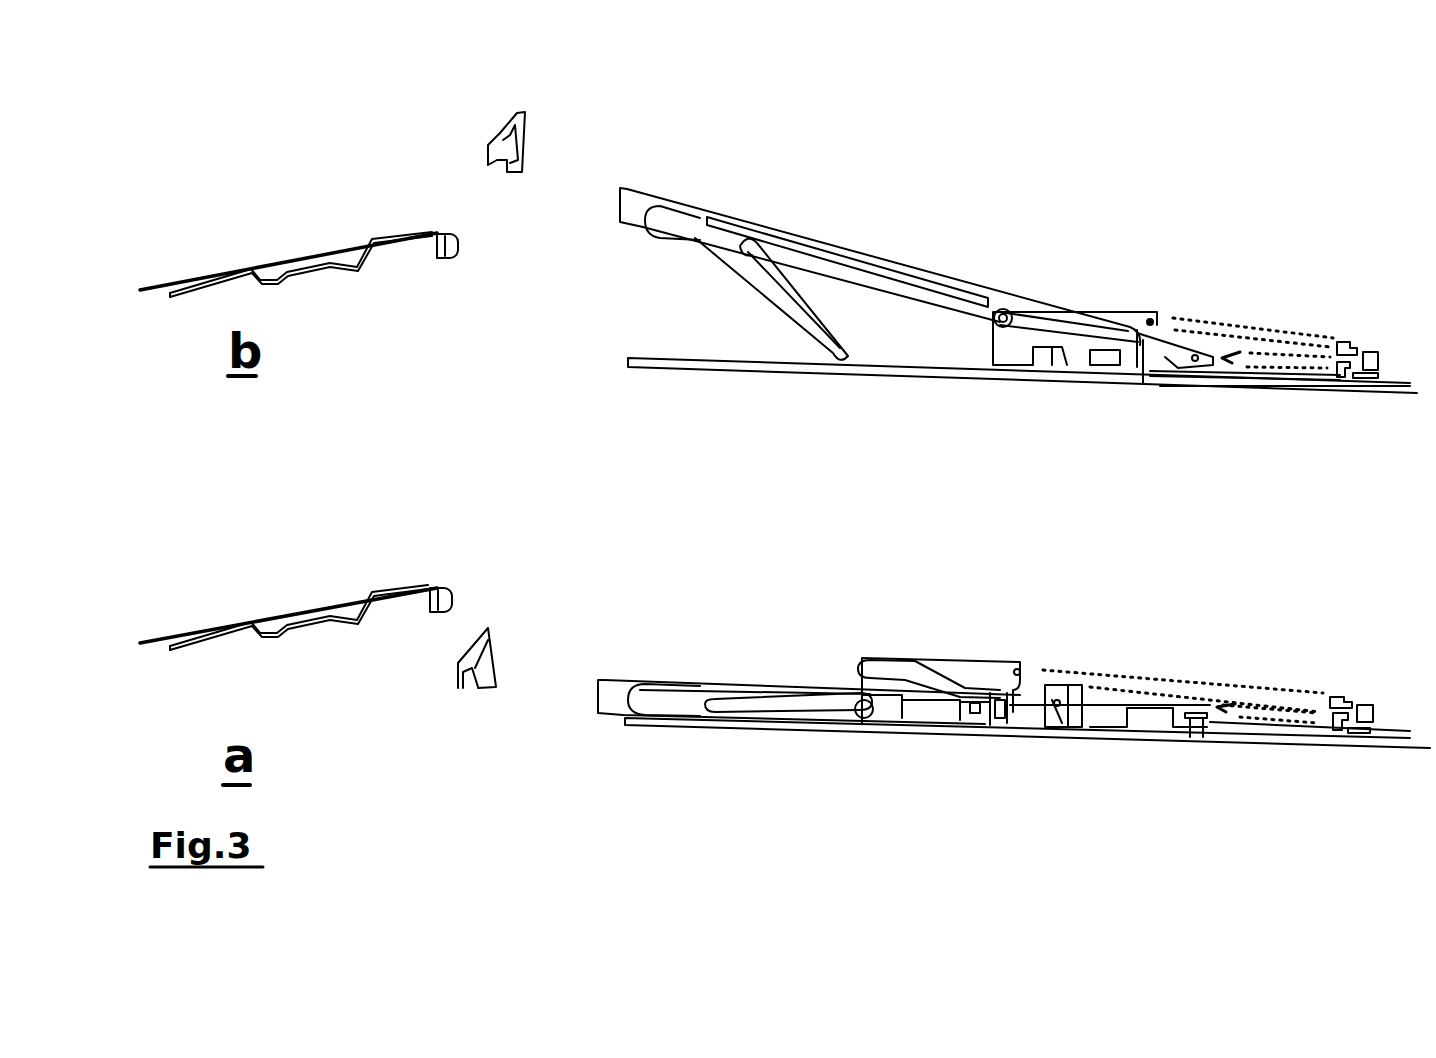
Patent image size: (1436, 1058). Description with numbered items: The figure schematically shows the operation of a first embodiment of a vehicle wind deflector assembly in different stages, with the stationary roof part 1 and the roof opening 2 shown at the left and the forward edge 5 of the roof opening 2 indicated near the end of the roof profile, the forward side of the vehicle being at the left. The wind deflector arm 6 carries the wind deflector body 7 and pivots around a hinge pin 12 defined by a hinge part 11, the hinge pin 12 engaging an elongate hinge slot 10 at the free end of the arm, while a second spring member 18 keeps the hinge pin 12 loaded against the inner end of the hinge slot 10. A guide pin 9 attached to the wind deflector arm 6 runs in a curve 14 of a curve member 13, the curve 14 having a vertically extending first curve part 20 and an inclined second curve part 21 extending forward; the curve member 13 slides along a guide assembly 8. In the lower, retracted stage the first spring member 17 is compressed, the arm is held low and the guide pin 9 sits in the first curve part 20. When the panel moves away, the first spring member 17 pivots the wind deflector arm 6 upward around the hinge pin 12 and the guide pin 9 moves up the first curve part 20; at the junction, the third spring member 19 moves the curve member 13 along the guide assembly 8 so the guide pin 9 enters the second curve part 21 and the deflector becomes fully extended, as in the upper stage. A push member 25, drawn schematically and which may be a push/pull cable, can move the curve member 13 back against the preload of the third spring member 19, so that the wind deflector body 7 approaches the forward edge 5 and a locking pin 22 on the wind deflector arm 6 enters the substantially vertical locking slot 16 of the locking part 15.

The stationary roof part 1 is at (248, 612).
The roof opening 2 is at (532, 650).
The forward edge 5 is at (452, 593).
The wind deflector arm 6 is at (654, 200).
The wind deflector body 7 is at (490, 140).
The guide assembly 8 is at (714, 370).
The guide pin 9 is at (1010, 308).
The hinge slot 10 is at (1206, 366).
The hinge part 11 is at (1348, 698).
The hinge pin 12 is at (1192, 366).
The curve member 13 is at (1110, 314).
The curve 14 is at (940, 655).
The locking part 15 is at (1055, 690).
The locking slot 16 is at (1060, 702).
The first spring member 17 is at (747, 282).
The second spring member 18 is at (1273, 372).
The third spring member 19 is at (1243, 325).
The first curve part 20 is at (1003, 700).
The second curve part 21 is at (1040, 310).
The locking pin 22 is at (1070, 710).
The push member 25 is at (1378, 388).